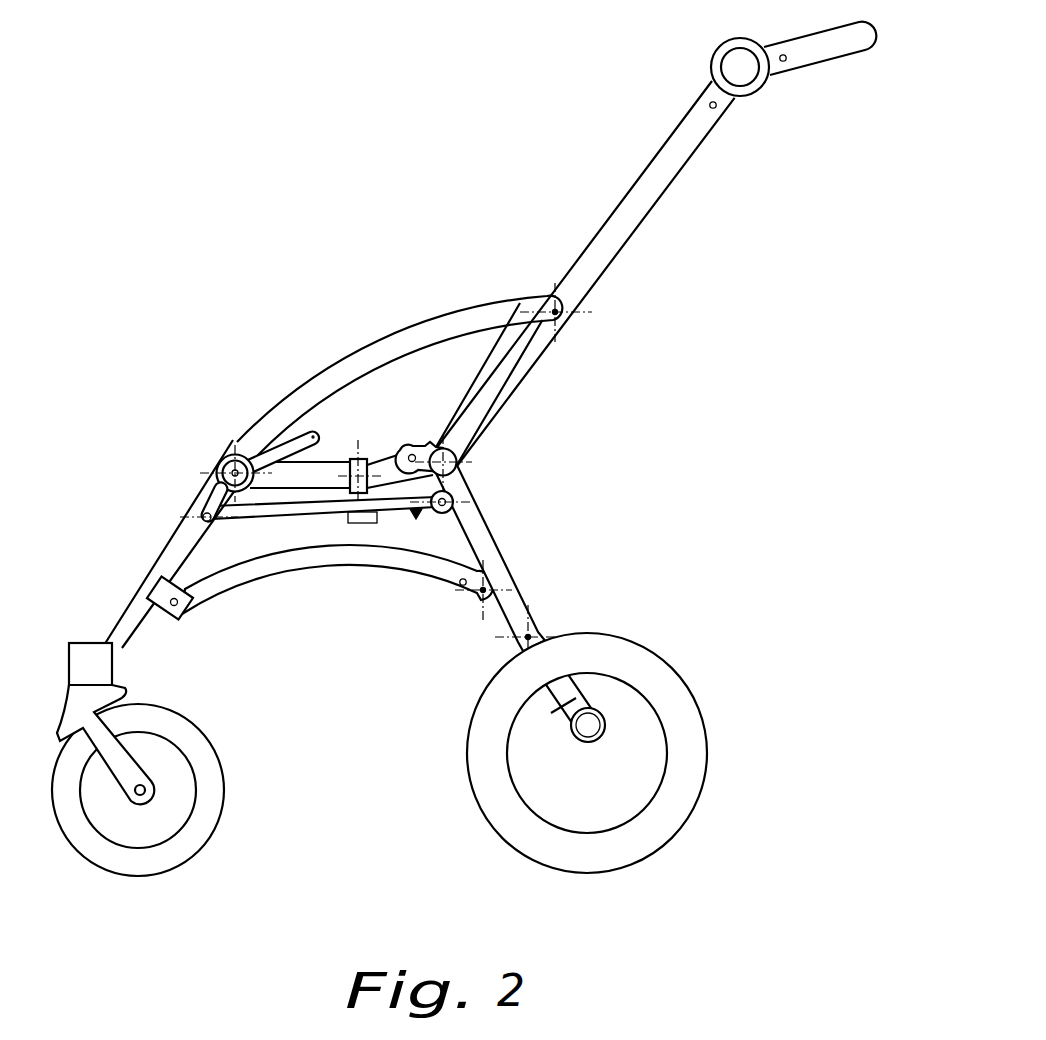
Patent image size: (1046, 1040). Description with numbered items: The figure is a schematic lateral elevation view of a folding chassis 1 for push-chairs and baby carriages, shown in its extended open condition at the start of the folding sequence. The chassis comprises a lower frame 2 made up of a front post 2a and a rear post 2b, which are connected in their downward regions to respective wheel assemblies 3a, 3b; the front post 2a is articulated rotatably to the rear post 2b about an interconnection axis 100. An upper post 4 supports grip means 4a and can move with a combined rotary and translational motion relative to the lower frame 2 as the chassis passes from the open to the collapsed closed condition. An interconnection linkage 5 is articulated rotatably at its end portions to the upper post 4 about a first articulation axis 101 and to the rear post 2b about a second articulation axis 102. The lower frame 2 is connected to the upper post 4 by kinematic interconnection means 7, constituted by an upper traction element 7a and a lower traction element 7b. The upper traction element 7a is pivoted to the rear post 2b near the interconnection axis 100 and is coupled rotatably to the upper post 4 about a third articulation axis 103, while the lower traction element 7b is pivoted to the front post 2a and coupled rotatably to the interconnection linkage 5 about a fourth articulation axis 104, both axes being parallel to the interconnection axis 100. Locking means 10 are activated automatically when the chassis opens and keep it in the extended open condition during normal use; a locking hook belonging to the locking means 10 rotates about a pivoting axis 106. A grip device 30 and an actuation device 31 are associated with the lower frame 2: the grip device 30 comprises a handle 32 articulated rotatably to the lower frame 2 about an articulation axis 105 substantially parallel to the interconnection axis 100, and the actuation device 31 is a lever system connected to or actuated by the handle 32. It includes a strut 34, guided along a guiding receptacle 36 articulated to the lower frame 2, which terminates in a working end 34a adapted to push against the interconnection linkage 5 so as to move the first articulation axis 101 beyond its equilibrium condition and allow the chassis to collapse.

The folding chassis 1 is at (464, 449).
The lower frame 2 is at (464, 449).
The front post 2a is at (175, 557).
The rear post 2b is at (472, 476).
The wheel assembly 3a is at (210, 785).
The wheel assembly 3b is at (690, 748).
The upper post 4 is at (654, 246).
The grip means 4a is at (815, 48).
The interconnection linkage 5 is at (500, 573).
The kinematic interconnection means 7 is at (372, 435).
The upper traction element 7a is at (360, 362).
The lower traction element 7b is at (398, 563).
The locking means 10 is at (408, 445).
The grip device 30 is at (266, 405).
The actuation device 31 is at (263, 534).
The handle 32 is at (302, 429).
The strut 34 is at (322, 508).
The working end 34a is at (455, 503).
The guiding receptacle 36 is at (364, 500).
The interconnection axis 100 is at (200, 500).
The first articulation axis 101 is at (468, 434).
The second articulation axis 102 is at (532, 637).
The third articulation axis 103 is at (565, 325).
The fourth articulation axis 104 is at (480, 600).
The articulation axis 105 is at (225, 452).
The pivoting axis 106 is at (372, 470).